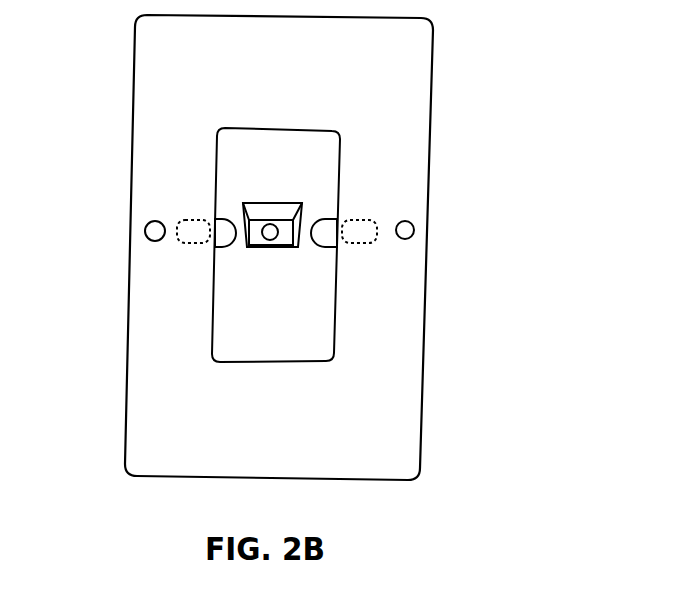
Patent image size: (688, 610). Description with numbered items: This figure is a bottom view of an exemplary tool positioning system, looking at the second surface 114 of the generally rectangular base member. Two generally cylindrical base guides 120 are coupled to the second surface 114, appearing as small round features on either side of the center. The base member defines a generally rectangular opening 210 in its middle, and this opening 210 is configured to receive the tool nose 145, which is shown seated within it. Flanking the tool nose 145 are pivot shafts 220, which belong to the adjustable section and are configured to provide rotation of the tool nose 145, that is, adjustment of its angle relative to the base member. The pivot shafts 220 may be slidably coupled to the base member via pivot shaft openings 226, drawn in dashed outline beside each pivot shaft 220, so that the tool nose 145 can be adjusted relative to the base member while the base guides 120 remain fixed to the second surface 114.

The second surface 114 is at (402, 407).
The opening 210 is at (310, 327).
The tool nose 145 is at (270, 199).
The pivot shafts 220 is at (308, 241).
The pivot shaft openings 226 is at (202, 212).
The base guides 120 is at (138, 238).